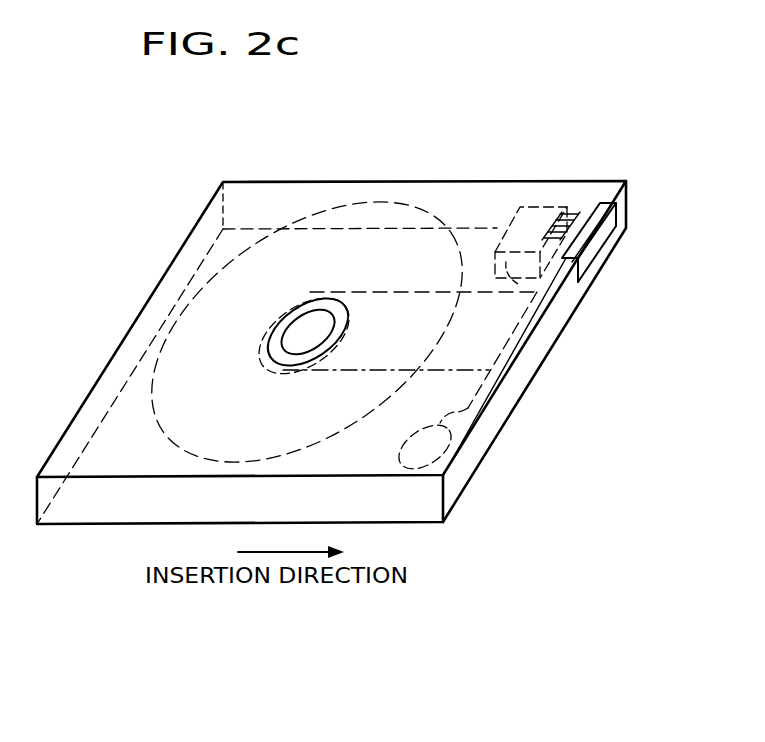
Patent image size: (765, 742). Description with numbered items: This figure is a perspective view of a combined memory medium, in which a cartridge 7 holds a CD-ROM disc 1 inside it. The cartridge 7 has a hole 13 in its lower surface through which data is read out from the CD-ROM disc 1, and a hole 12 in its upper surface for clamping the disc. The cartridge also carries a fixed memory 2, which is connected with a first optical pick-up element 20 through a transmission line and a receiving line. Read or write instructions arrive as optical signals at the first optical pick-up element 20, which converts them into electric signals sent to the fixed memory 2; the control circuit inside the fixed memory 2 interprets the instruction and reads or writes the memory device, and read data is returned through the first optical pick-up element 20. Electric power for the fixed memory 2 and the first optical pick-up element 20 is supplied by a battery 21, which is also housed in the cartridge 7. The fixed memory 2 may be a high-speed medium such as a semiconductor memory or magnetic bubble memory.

The CD-ROM disc 1 is at (167, 422).
The fixed memory 2 is at (548, 207).
The cartridge 7 is at (418, 181).
The hole 12 is at (352, 330).
The hole 13 is at (528, 340).
The first optical pick-up element 20 is at (598, 204).
The battery 21 is at (445, 448).